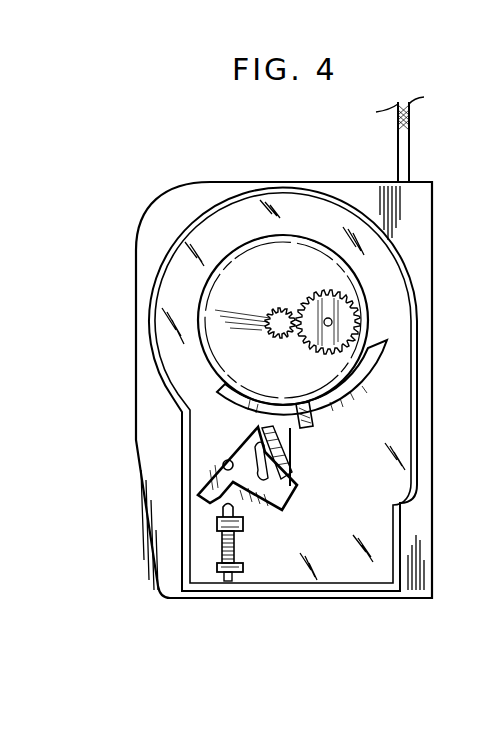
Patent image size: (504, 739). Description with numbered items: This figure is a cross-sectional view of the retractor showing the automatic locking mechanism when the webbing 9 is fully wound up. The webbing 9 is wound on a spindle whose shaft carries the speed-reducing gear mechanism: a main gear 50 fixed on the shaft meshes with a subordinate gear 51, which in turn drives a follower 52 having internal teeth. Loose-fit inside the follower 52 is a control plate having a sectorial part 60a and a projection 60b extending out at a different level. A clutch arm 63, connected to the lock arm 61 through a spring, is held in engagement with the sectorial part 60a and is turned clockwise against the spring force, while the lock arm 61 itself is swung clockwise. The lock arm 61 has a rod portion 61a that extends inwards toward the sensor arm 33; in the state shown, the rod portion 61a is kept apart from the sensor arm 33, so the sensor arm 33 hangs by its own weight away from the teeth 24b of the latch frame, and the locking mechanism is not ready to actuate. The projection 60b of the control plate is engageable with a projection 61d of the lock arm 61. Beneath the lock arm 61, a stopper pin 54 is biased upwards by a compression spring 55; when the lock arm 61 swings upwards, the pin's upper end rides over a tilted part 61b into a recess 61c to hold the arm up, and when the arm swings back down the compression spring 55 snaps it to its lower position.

The webbing 9 is at (410, 140).
The main gear 50 is at (283, 304).
The subordinate gear 51 is at (355, 310).
The follower 52 is at (358, 272).
The sectorial part 60a is at (385, 356).
The projection 60b is at (342, 418).
The teeth 24b is at (313, 425).
The sensor arm 33 is at (303, 430).
The lock arm 61 is at (283, 505).
The rod portion 61a is at (270, 466).
The tilted part 61b is at (222, 505).
The recess 61c is at (205, 500).
The projection 61d is at (255, 506).
The clutch arm 63 is at (256, 428).
The stopper pin 54 is at (222, 517).
The compression spring 55 is at (222, 562).